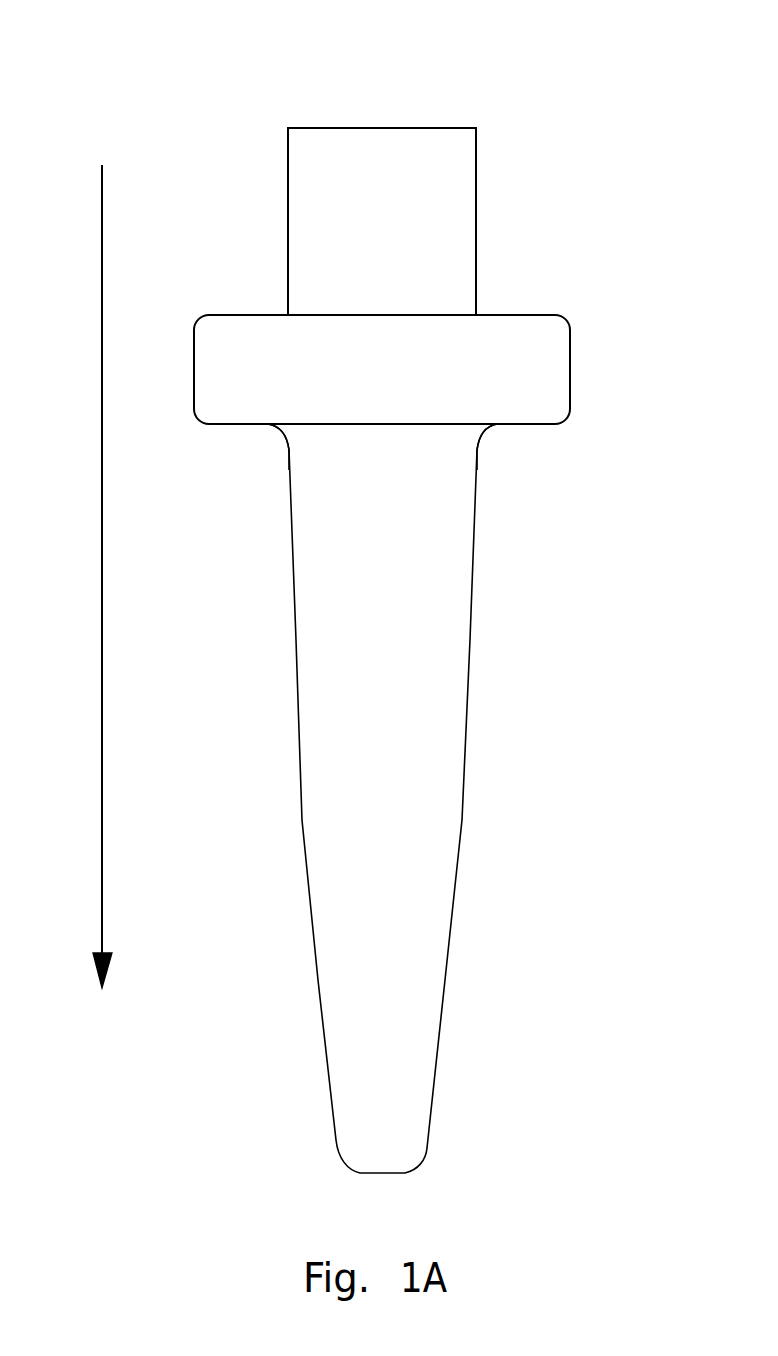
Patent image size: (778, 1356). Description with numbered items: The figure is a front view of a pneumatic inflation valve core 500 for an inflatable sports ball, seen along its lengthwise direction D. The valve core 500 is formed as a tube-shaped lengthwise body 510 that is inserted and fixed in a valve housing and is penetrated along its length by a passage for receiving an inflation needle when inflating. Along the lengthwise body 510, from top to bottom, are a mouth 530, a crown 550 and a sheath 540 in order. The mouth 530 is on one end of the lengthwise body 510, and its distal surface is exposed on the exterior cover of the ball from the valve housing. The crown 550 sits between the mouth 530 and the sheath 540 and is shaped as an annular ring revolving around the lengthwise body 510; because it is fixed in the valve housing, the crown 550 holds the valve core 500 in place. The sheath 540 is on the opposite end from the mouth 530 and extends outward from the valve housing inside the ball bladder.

The pneumatic inflation valve core 500 is at (677, 42).
The mouth 530 is at (452, 231).
The crown 550 is at (550, 378).
The lengthwise body 510 is at (460, 438).
The sheath 540 is at (442, 773).